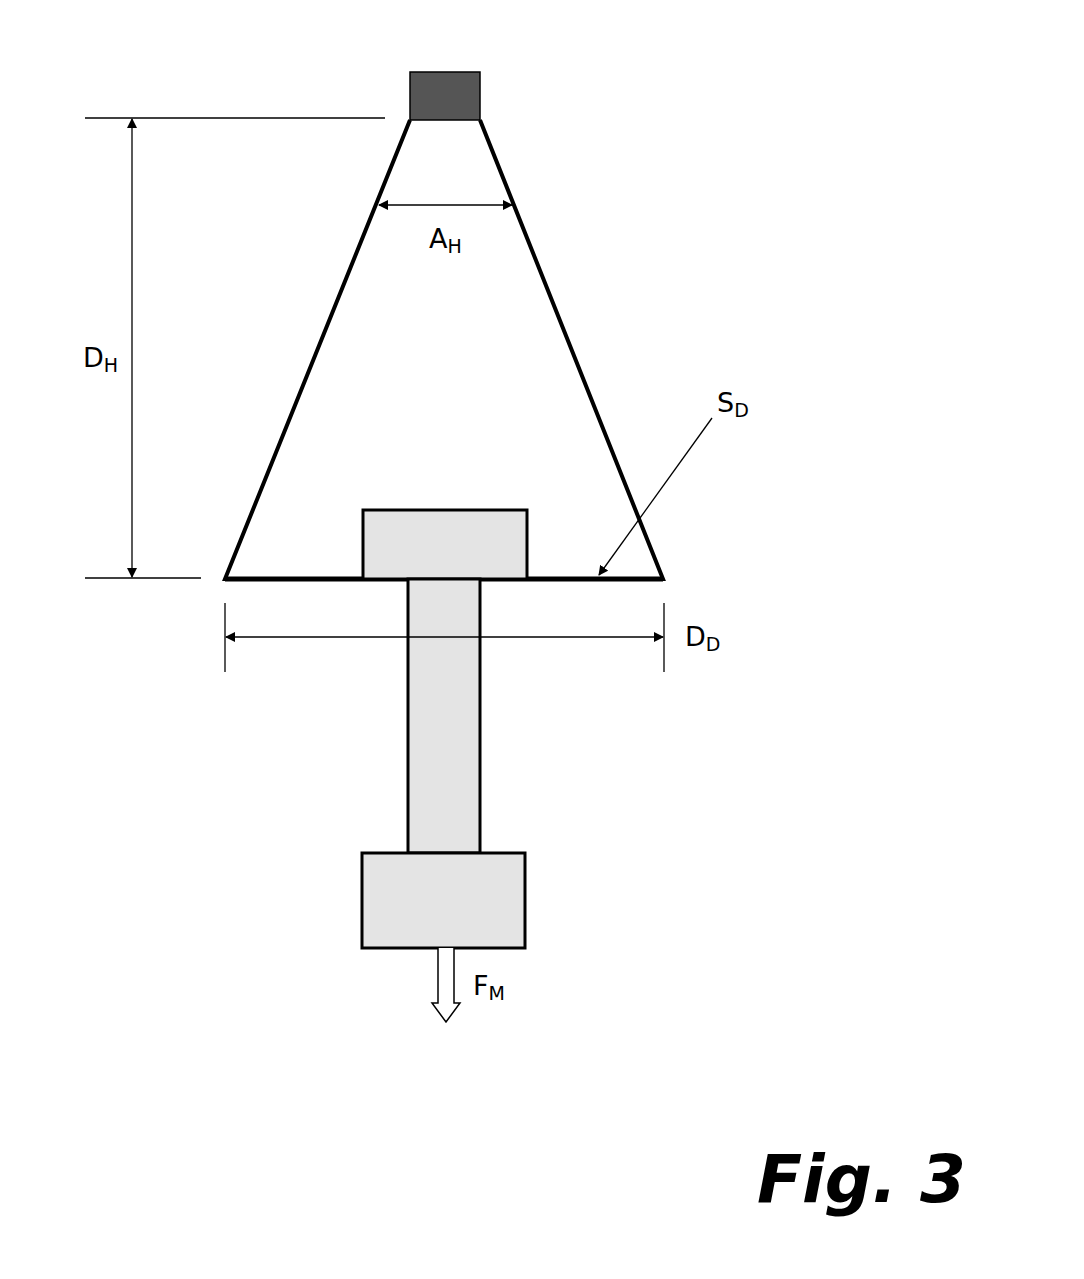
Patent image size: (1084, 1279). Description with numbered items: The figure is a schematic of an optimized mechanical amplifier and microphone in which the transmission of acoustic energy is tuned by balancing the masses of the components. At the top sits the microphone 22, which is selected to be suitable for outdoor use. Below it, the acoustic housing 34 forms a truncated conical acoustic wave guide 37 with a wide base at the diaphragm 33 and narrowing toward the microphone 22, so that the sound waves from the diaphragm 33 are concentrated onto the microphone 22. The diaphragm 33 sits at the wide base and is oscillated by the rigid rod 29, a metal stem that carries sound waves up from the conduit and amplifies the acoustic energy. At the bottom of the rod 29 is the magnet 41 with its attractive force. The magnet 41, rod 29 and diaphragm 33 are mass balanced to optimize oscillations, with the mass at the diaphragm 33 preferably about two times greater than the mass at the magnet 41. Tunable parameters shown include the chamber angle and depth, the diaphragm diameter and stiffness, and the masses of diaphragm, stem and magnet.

The microphone 22 is at (472, 72).
The acoustic housing 34 is at (565, 315).
The acoustic wave guide 37 is at (451, 379).
The diaphragm 33 is at (535, 587).
The rigid rod 29 is at (480, 837).
The magnet 41 is at (525, 917).